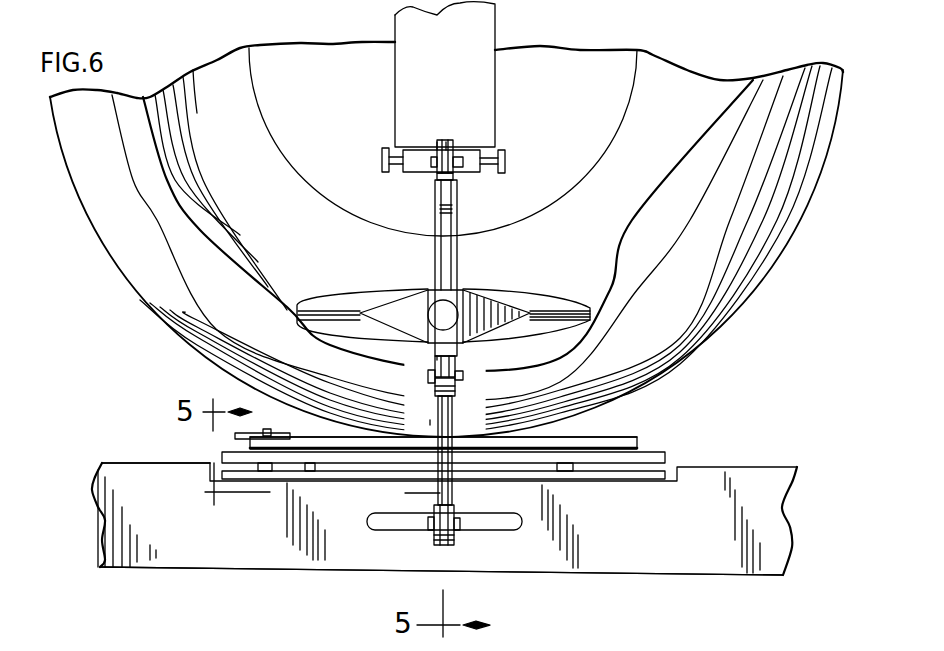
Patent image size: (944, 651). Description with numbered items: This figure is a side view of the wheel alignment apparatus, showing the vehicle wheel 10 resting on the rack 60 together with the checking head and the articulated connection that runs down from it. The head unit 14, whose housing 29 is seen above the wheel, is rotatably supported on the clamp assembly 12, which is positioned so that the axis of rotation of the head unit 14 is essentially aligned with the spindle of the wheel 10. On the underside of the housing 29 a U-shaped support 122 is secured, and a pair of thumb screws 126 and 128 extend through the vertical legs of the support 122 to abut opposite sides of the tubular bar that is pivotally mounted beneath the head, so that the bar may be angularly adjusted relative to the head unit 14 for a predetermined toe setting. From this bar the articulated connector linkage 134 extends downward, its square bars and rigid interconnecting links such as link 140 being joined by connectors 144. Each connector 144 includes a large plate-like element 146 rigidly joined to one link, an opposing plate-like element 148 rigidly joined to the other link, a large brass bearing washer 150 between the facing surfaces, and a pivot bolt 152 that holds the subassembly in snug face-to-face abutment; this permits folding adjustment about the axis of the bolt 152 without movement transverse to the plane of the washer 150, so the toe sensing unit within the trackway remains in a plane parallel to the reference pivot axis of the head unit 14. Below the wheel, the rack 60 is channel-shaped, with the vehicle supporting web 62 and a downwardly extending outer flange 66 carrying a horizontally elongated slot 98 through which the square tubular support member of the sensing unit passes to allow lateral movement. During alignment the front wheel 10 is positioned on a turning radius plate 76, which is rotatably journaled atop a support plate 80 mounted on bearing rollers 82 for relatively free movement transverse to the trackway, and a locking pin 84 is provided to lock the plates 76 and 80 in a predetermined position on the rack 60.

The wheel 10 is at (758, 285).
The clamp assembly 12 is at (489, 292).
The head unit 14 is at (497, 16).
The housing 29 is at (482, 78).
The rack 60 is at (744, 466).
The web 62 is at (121, 463).
The outer flange 66 is at (652, 553).
The turning radius plate 76 is at (600, 440).
The support plate 80 is at (652, 452).
The bearing roller 82 is at (557, 462).
The locking pin 84 is at (270, 430).
The slot 98 is at (488, 528).
The U-shaped support 122 is at (470, 152).
The thumb screw 126 is at (382, 160).
The thumb screw 128 is at (505, 160).
The articulated connector linkage 134 is at (422, 418).
The interconnecting link 140 is at (458, 218).
The connector 144 is at (432, 178).
The plate-like element 146 is at (455, 150).
The plate-like element 148 is at (437, 148).
The bearing washer 150 is at (447, 140).
The pivot bolt 152 is at (432, 167).